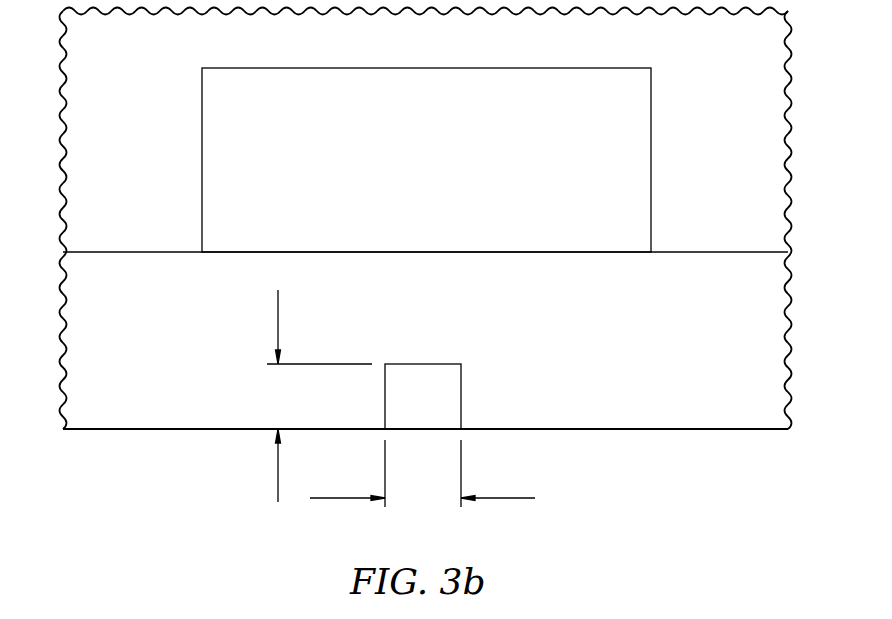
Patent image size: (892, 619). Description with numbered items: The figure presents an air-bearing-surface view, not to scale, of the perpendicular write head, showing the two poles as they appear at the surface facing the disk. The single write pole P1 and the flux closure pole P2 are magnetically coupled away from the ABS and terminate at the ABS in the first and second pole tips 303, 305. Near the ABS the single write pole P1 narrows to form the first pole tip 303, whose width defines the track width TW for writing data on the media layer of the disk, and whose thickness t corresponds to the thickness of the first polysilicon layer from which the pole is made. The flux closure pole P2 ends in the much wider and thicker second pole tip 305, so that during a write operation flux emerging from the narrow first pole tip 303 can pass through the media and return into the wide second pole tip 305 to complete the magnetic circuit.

The first pole tip 303 is at (423, 370).
The second pole tip 305 is at (426, 160).
The single write pole P1 is at (424, 396).
The flux closure pole P2 is at (424, 176).
The thickness of first polysilicon layer t is at (319, 396).
The track width TW is at (422, 475).